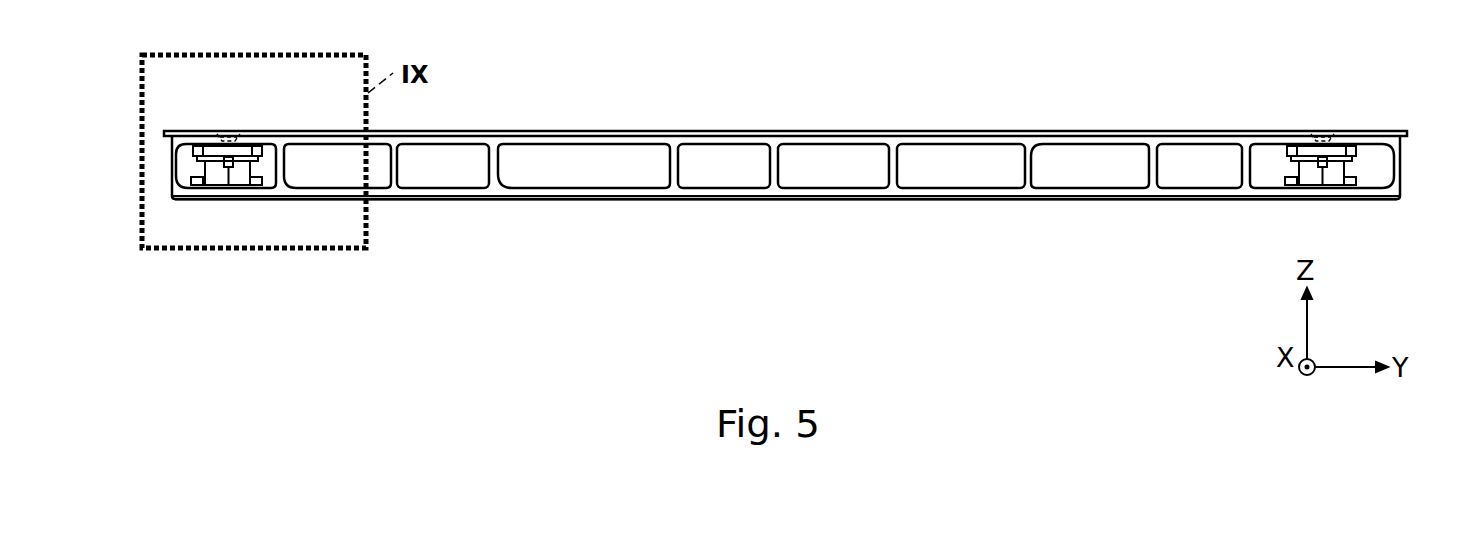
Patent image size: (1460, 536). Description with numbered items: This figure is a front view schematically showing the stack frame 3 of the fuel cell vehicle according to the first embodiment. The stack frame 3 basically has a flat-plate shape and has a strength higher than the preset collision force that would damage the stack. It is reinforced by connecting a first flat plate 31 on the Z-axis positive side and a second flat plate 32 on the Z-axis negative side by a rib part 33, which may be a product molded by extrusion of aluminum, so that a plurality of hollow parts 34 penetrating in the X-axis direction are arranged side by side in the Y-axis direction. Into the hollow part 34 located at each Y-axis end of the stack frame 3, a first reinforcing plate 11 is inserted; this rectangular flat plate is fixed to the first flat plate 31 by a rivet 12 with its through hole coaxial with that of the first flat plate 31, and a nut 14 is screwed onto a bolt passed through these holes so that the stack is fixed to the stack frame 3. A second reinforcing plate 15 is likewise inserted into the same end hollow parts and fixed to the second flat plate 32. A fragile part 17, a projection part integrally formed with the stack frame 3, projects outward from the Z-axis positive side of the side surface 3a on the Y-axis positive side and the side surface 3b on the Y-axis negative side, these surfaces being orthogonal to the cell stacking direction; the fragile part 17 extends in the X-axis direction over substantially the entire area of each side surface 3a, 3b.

The stack frame 3 is at (1127, 126).
The side surface 3a is at (1401, 158).
The side surface 3b is at (168, 167).
The first reinforcing plate 11 is at (253, 147).
The rivet 12 is at (231, 168).
The nut 14 is at (218, 175).
The second reinforcing plate 15 is at (196, 184).
The fragile part 17 is at (165, 136).
The first flat plate 31 is at (965, 140).
The second flat plate 32 is at (927, 201).
The rib part 33 is at (1031, 165).
The hollow part 34 is at (737, 188).